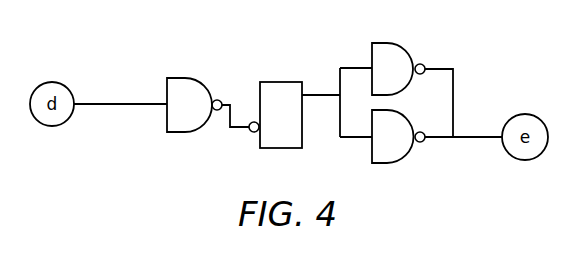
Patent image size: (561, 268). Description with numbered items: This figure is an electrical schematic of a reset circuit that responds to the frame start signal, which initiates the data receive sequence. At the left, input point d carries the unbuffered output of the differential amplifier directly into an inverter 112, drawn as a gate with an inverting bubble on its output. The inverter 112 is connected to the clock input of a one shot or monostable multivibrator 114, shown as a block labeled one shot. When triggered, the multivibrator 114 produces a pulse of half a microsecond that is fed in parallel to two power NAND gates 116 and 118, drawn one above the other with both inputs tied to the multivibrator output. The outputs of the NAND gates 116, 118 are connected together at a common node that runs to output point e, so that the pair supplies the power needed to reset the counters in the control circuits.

The inverter 112 is at (176, 80).
The one shot or monostable multivibrator 114 is at (268, 83).
The power NAND gate 116 is at (405, 49).
The power NAND gate 118 is at (393, 119).